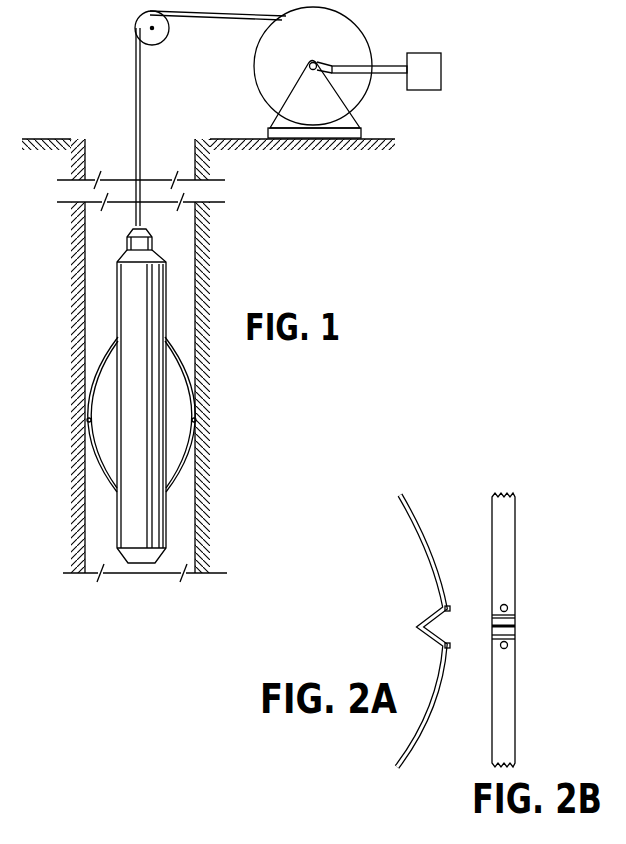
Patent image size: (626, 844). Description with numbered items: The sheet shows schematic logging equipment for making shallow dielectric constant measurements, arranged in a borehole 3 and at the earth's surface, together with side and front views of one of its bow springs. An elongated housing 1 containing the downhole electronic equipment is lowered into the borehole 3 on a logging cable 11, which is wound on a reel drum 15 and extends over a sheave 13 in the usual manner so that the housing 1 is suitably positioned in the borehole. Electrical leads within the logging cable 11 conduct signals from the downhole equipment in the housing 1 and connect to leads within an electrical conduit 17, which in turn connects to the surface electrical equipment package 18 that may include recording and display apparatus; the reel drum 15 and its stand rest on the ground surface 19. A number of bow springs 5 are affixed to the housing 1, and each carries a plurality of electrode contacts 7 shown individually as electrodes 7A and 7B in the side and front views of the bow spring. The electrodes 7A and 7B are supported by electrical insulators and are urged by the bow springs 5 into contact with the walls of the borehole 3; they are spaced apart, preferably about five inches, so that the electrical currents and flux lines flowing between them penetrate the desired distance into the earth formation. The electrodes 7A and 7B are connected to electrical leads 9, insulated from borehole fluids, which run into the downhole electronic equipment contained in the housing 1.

In FIG. 1, the elongated housing 1 is at (117, 285).
In FIG. 1, the borehole 3 is at (193, 258).
In FIG. 1, the bow spring 5 is at (105, 356).
In FIG. 2A, the bow spring 5 is at (421, 541).
In FIG. 2B, the bow spring 5 is at (516, 543).
In FIG. 1, the electrode contact 7 is at (89, 420).
In FIG. 2A, the electrode contact 7A is at (451, 609).
In FIG. 2A, the electrode contact 7B is at (451, 647).
In FIG. 1, the electrical leads 9 is at (117, 404).
In FIG. 1, the logging cable 11 is at (136, 108).
In FIG. 1, the sheave 13 is at (164, 39).
In FIG. 1, the reel drum 15 is at (256, 74).
In FIG. 1, the electrical conduit 17 is at (394, 66).
In FIG. 1, the surface electrical equipment package 18 is at (441, 72).
In FIG. 1, the ground surface 19 is at (386, 139).